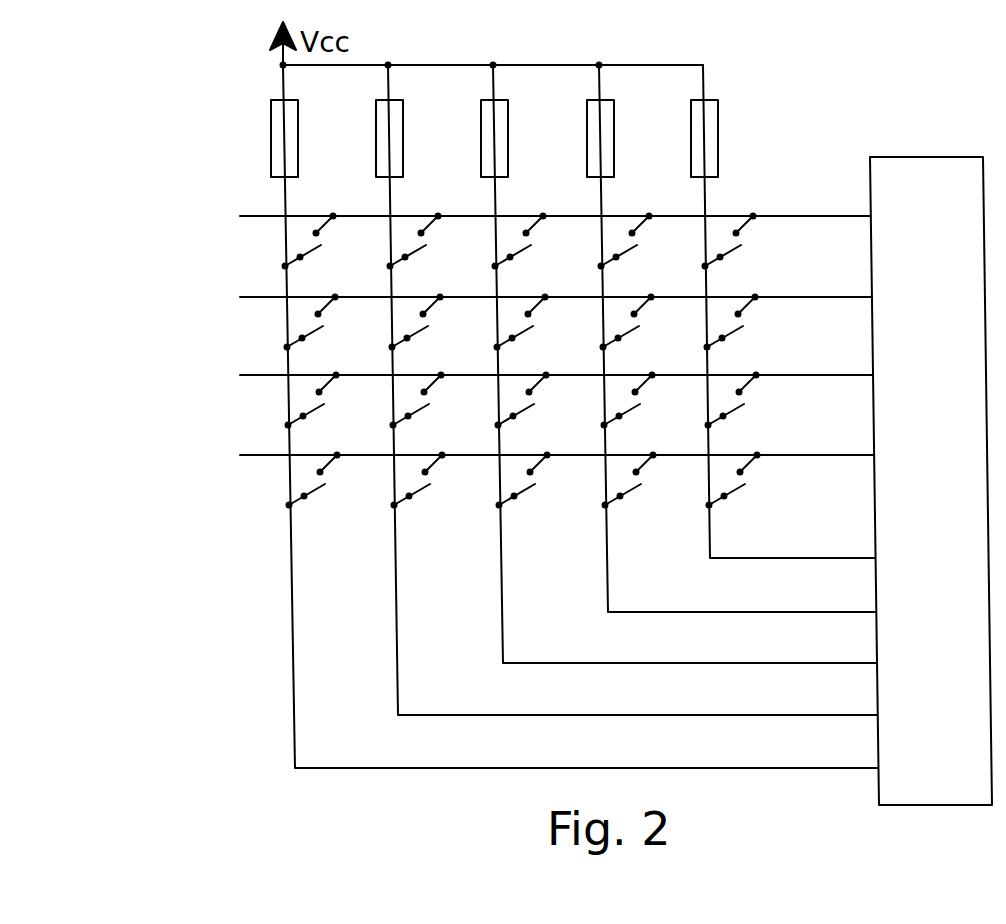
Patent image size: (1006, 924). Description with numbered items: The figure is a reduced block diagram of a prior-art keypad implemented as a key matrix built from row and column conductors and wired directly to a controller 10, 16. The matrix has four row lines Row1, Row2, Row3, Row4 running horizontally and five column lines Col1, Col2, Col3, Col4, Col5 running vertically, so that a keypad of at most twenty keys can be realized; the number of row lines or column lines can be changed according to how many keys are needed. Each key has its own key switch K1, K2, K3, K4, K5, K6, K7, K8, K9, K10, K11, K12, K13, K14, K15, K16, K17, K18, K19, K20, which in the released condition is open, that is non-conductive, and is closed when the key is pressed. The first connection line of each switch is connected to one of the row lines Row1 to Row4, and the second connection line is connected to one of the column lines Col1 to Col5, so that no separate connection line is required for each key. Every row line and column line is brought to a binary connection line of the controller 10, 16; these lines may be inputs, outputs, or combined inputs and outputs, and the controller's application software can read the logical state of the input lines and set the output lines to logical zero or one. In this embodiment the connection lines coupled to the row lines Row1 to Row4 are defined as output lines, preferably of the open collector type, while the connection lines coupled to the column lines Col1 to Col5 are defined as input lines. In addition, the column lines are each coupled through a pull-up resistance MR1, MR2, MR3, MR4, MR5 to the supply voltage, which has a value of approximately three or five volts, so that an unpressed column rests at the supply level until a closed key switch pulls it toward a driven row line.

The controller 10 is at (931, 431).
The controller 16 is at (930, 157).
The pull-up resistance MR1 is at (736, 138).
The pull-up resistance MR2 is at (632, 138).
The pull-up resistance MR3 is at (526, 138).
The pull-up resistance MR4 is at (421, 138).
The pull-up resistance MR5 is at (316, 138).
The key switch K1 is at (750, 256).
The key switch K2 is at (646, 256).
The key switch K3 is at (540, 256).
The key switch K4 is at (435, 256).
The key switch K5 is at (330, 256).
The key switch K6 is at (752, 337).
The key switch K7 is at (648, 337).
The key switch K8 is at (542, 337).
The key switch K9 is at (437, 337).
The key switch K10 is at (338, 337).
The key switch K11 is at (759, 415).
The key switch K12 is at (655, 415).
The key switch K13 is at (549, 415).
The key switch K14 is at (444, 415).
The key switch K15 is at (339, 415).
The key switch K16 is at (760, 495).
The key switch K17 is at (656, 495).
The key switch K18 is at (550, 495).
The key switch K19 is at (445, 495).
The key switch K20 is at (340, 495).
The row line Row1 is at (258, 218).
The row line Row2 is at (258, 299).
The row line Row3 is at (258, 377).
The row line Row4 is at (258, 457).
The column line Col1 is at (715, 555).
The column line Col2 is at (613, 609).
The column line Col3 is at (508, 660).
The column line Col4 is at (403, 712).
The column line Col5 is at (300, 765).